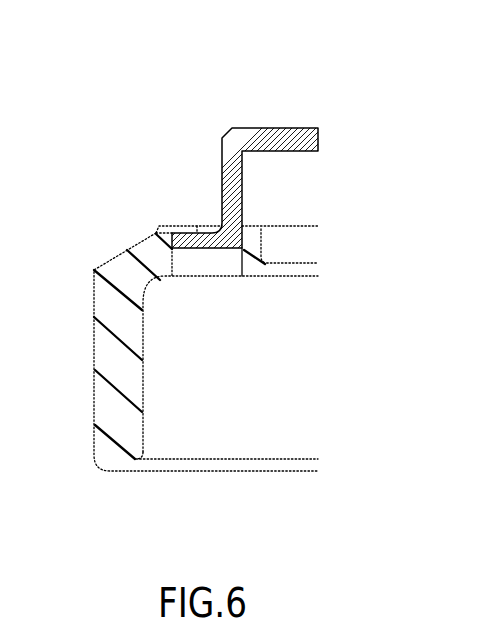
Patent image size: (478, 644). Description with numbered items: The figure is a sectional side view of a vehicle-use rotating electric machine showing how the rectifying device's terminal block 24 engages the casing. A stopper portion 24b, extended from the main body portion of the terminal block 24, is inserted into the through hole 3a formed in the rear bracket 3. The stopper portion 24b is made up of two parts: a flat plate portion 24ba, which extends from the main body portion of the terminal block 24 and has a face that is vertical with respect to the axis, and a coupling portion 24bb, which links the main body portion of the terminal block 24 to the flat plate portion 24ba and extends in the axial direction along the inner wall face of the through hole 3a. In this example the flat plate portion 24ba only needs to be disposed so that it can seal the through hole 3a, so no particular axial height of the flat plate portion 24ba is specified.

The rear bracket 3 is at (112, 305).
The through hole 3a is at (180, 226).
The terminal block 24 is at (275, 128).
The stopper portion 24b is at (197, 228).
The coupling portion 24bb is at (230, 185).
The flat plate portion 24ba is at (212, 248).